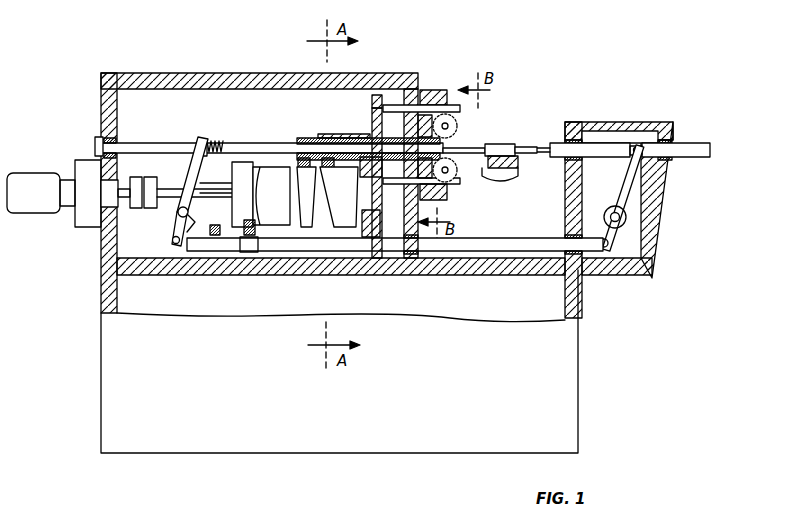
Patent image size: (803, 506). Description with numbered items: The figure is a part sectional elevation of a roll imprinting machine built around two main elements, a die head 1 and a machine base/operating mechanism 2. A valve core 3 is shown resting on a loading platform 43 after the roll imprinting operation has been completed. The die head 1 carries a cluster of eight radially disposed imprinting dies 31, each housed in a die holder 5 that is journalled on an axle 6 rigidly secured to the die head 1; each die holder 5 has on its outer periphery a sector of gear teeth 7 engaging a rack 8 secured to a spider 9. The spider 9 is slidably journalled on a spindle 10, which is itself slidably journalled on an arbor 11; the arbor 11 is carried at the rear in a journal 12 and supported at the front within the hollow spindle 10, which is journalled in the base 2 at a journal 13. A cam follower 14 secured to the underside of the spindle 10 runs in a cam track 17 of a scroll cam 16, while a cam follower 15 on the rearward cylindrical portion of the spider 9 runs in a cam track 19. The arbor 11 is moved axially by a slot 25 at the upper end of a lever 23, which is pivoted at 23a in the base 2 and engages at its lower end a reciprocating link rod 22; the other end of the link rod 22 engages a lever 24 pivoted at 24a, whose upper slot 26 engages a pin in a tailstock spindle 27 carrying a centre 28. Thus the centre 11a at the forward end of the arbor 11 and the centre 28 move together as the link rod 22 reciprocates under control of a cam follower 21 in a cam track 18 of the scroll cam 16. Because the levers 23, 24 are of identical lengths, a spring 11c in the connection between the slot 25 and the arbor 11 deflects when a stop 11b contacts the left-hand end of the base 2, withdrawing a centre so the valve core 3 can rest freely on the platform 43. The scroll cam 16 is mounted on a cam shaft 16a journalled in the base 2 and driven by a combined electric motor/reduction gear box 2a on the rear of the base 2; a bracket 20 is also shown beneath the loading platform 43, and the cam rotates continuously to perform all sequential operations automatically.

The die head 1 is at (433, 93).
The machine base/operating mechanism 2 is at (570, 340).
The combined electric motor/reduction gear box 2a is at (43, 205).
The valve core 3 is at (526, 160).
The die holder 5 is at (452, 131).
The axle 6 is at (455, 128).
The sector of gear teeth 7 is at (456, 178).
The rack 8 is at (403, 205).
The spider 9 is at (377, 100).
The spindle 10 is at (295, 136).
The arbor 11 is at (278, 142).
The centre 11a is at (470, 150).
The stop 11b is at (97, 138).
The spring 11c is at (222, 143).
The journal 12 is at (110, 137).
The journal 13 is at (417, 90).
The cam follower 14 is at (302, 160).
The cam follower 15 is at (330, 160).
The scroll cam 16 is at (247, 160).
The cam shaft 16a is at (207, 188).
The cam track 17 is at (303, 215).
The cam track 18 is at (250, 195).
The cam track 19 is at (338, 215).
The bracket 20 is at (500, 182).
The cam follower 21 is at (257, 228).
The reciprocating link rod 22 is at (245, 250).
The lever 23 is at (170, 226).
The pivot 23a is at (173, 232).
The lever 24 is at (622, 185).
The pivot 24a is at (640, 196).
The slot 25 is at (202, 142).
The slot 26 is at (638, 145).
The tailstock spindle 27 is at (586, 150).
The centre 28 is at (553, 142).
The imprinting die 31 is at (500, 145).
The loading platform 43 is at (490, 169).